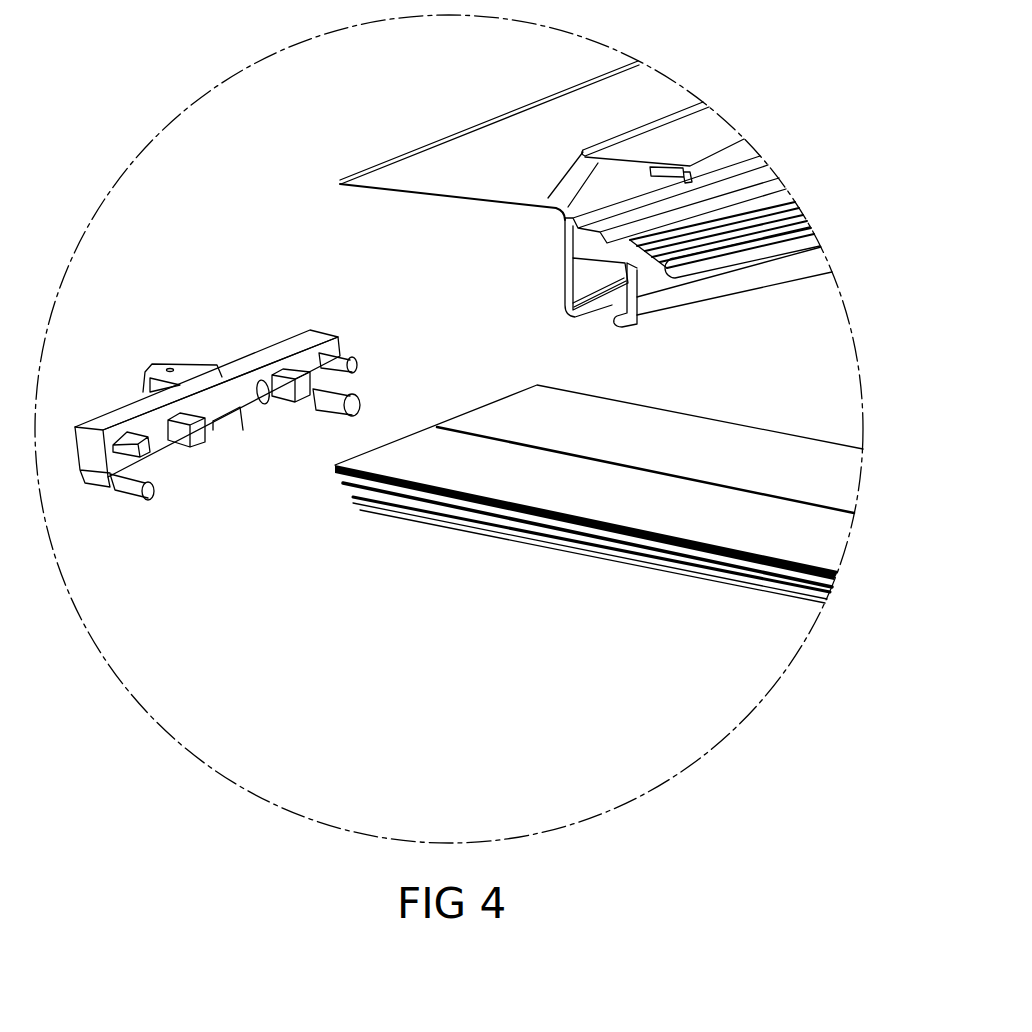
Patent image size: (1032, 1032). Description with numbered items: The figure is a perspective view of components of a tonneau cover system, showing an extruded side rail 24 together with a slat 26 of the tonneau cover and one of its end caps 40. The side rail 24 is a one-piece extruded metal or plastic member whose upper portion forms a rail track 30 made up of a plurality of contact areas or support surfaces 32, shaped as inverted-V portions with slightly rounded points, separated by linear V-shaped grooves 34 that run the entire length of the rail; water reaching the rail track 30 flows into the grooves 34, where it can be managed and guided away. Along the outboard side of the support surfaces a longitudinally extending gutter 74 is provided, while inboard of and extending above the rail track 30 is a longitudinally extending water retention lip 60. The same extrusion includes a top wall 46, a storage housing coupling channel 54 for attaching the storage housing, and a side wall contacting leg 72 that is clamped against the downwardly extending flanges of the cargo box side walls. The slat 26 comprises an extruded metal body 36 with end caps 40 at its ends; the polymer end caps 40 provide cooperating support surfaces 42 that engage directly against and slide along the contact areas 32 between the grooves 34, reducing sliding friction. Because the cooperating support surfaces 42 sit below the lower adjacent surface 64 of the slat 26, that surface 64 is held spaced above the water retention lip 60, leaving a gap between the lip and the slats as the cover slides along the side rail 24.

The side rail 24 is at (500, 255).
The slat 26 is at (722, 452).
The rail track 30 is at (680, 240).
The contact areas 32 is at (642, 270).
The grooves 34 is at (795, 203).
The extruded body 36 is at (592, 490).
The end cap 40 is at (265, 425).
The cooperating support surfaces 42 is at (310, 408).
The top wall 46 is at (603, 158).
The storage housing coupling channel 54 is at (580, 285).
The water retention lip 60 is at (690, 262).
The lower adjacent surface 64 is at (620, 558).
The side wall contacting leg 72 is at (563, 273).
The gutter 74 is at (607, 248).